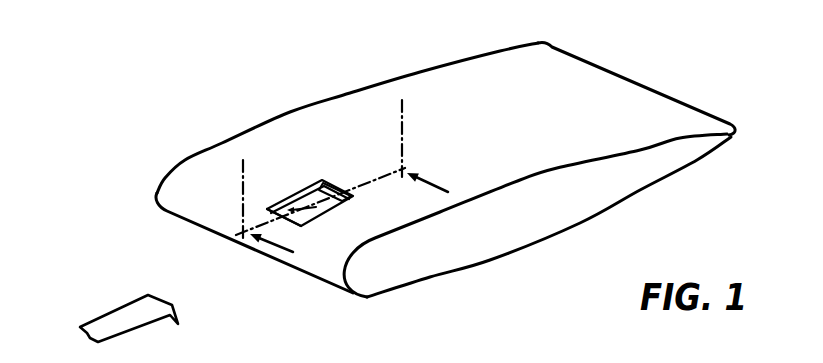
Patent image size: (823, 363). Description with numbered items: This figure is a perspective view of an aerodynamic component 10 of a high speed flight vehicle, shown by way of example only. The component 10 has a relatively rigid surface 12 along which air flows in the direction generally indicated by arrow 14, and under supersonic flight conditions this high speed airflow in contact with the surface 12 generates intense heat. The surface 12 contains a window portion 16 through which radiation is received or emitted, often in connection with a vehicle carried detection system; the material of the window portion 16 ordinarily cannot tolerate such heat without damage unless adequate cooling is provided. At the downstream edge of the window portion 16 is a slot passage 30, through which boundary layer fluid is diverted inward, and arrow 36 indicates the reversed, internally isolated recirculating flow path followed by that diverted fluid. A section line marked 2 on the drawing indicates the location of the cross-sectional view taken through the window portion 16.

The aerodynamic component 10 is at (284, 105).
The surface 12 is at (230, 157).
The arrow 14 is at (132, 317).
The window portion 16 is at (300, 176).
The slot passage 30 is at (319, 182).
The arrow 36 is at (316, 208).
The section line 2- 2 is at (329, 176).